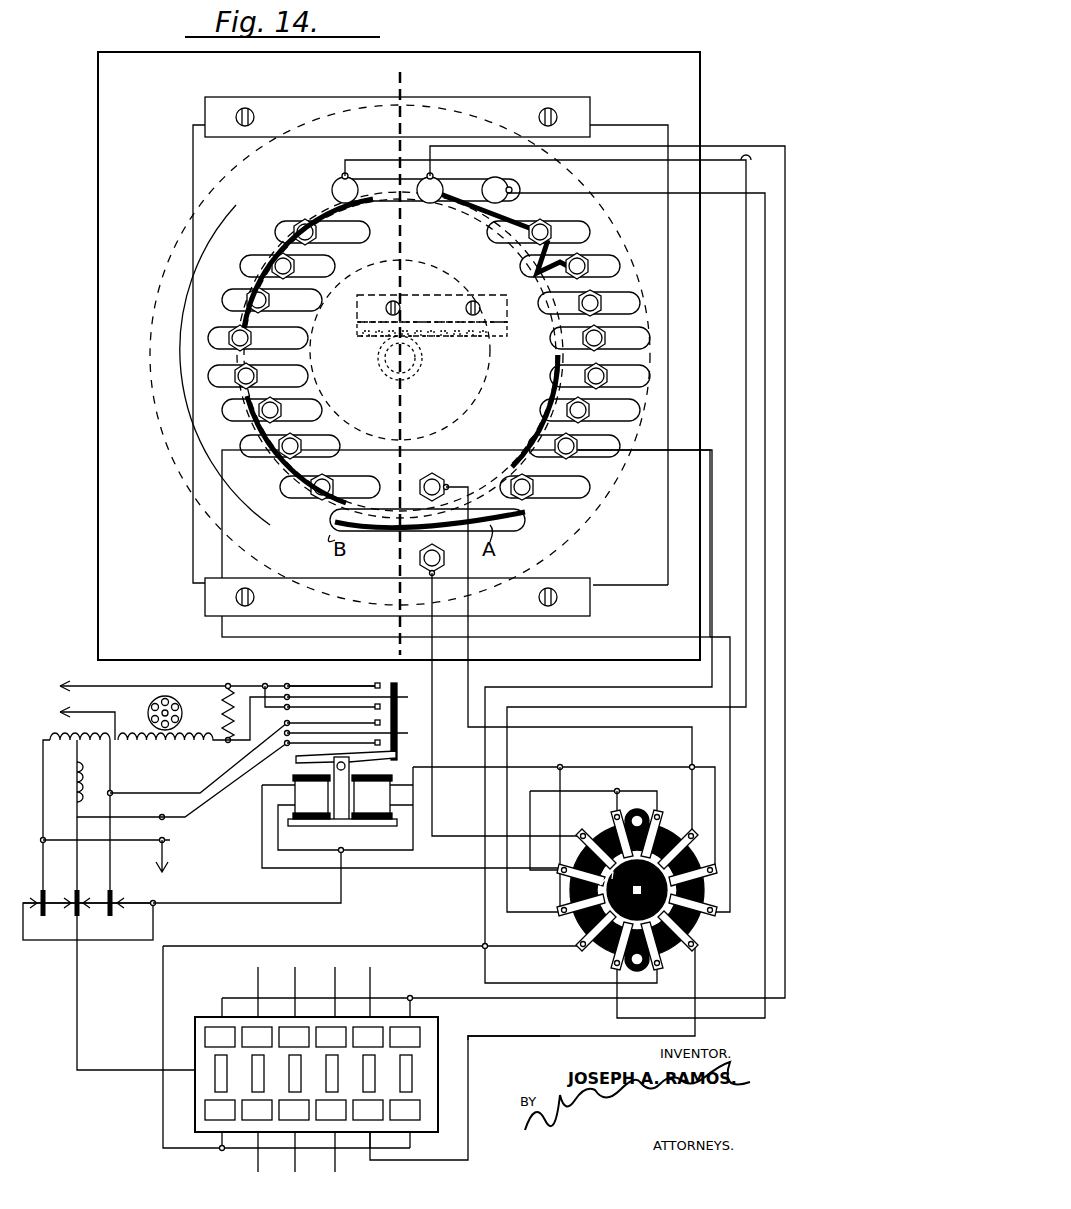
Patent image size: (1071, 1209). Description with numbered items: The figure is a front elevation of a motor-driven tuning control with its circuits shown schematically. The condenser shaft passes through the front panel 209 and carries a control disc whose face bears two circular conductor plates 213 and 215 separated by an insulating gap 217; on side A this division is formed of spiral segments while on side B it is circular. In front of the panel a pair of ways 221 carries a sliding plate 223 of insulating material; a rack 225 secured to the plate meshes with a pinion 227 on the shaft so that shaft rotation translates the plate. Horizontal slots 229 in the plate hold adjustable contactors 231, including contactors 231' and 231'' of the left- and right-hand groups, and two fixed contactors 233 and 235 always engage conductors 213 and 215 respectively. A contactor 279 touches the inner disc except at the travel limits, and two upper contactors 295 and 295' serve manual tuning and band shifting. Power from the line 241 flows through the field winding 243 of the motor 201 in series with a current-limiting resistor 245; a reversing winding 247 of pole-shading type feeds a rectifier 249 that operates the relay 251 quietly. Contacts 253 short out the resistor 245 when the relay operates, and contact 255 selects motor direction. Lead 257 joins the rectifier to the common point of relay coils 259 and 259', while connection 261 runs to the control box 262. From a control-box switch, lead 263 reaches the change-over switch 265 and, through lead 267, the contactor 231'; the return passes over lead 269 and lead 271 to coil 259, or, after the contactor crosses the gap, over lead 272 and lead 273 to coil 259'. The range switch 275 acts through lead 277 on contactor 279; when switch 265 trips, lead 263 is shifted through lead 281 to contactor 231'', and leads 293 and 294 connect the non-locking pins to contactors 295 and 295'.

The front panel 209 is at (162, 144).
The ways 221 is at (608, 90).
The lead 277 is at (760, 146).
The circular conductor plate 215 is at (195, 232).
The upper contactor 295 is at (321, 178).
The insulating gap 217 is at (442, 193).
The upper contactor 295' is at (519, 182).
The contactor 279 is at (432, 200).
The contactors 231 is at (557, 236).
The horizontal slots 229 is at (590, 232).
The rack 225 is at (445, 300).
The pinion 227 is at (425, 360).
The circular conductor plate 213 is at (548, 380).
The contactor 231' is at (309, 427).
The contactor 231'' is at (553, 431).
The contactor 233 is at (440, 484).
The contactor 235 is at (420, 558).
The sliding plate 223 is at (200, 553).
The contacts 253 is at (352, 682).
The contact 255 is at (402, 738).
The relay 251 is at (348, 822).
The relay coil 259 is at (311, 808).
The relay coil 259' is at (411, 814).
The lead 272 is at (434, 712).
The lead 269 is at (476, 672).
The lead 273 is at (524, 765).
The lead 267 is at (748, 806).
The line 241 is at (62, 712).
The motor 201 is at (150, 714).
The current-limiting resistor 245 is at (215, 714).
The reversing winding 247 is at (60, 738).
The field winding 243 is at (180, 742).
The rectifier 249 is at (78, 890).
The lead 257 is at (260, 903).
The lead 271 is at (422, 870).
The lead 281 is at (480, 930).
The change-over switch 265 is at (700, 924).
The connection 261 is at (82, 960).
The lead 293 is at (224, 1000).
The switch 275 is at (415, 1040).
The control box 262 is at (438, 1037).
The lead 263 is at (484, 1078).
The lead 294 is at (163, 1110).